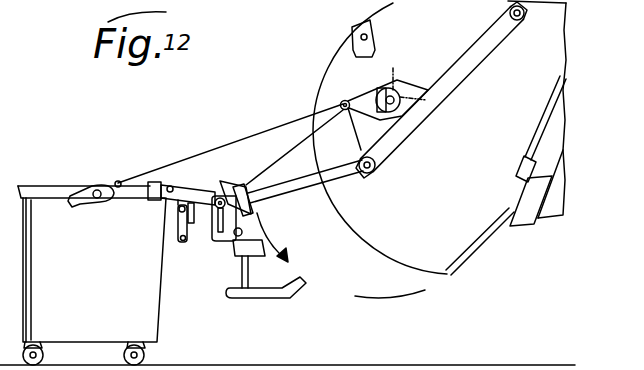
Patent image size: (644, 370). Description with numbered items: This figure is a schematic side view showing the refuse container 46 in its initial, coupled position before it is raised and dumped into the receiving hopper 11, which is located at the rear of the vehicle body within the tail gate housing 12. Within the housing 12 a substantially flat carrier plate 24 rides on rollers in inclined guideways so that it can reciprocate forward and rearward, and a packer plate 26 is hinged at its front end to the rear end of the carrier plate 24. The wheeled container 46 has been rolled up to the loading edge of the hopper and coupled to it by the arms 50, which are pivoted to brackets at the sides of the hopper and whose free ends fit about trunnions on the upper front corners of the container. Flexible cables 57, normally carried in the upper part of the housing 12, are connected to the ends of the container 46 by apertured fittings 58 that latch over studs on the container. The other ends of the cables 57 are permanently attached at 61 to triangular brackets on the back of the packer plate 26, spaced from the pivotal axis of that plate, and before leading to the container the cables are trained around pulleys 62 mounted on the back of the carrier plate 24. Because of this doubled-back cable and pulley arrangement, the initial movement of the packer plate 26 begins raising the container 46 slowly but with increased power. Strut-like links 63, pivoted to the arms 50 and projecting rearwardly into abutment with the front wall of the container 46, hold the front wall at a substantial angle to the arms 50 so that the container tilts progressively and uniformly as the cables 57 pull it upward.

The receiving hopper 11 is at (390, 287).
The tail gate housing 12 is at (340, 37).
The carrier plate 24 is at (434, 103).
The packer plate 26 is at (318, 181).
The container 46 is at (103, 284).
The arms 50 is at (200, 192).
The flexible cables 57 is at (213, 151).
The fittings 58 is at (83, 203).
The cable attachment point 61 is at (342, 100).
The pulleys 62 is at (401, 82).
The strut-like links 63 is at (186, 242).